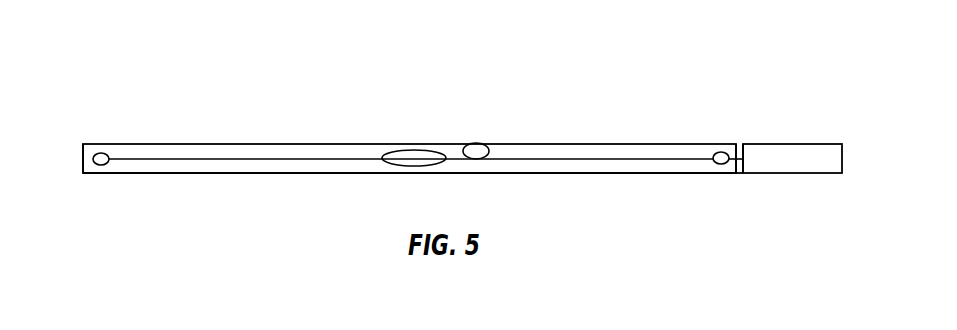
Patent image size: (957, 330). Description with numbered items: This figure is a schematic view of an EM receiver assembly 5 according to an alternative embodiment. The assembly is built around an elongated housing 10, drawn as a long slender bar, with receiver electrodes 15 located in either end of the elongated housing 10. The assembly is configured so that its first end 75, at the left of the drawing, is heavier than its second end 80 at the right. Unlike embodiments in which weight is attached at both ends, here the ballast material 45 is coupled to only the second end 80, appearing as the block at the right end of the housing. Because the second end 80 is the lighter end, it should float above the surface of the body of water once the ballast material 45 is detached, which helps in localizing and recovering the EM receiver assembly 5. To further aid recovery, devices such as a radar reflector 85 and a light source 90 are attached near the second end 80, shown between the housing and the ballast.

The EM receiver assembly 5 is at (538, 76).
The elongated housing 10 is at (263, 143).
The receiver electrodes 15 is at (97, 153).
The ballast material 45 is at (788, 144).
The first end 75 is at (100, 175).
The second end 80 is at (682, 175).
The radar reflector 85 is at (740, 144).
The light source 90 is at (739, 175).